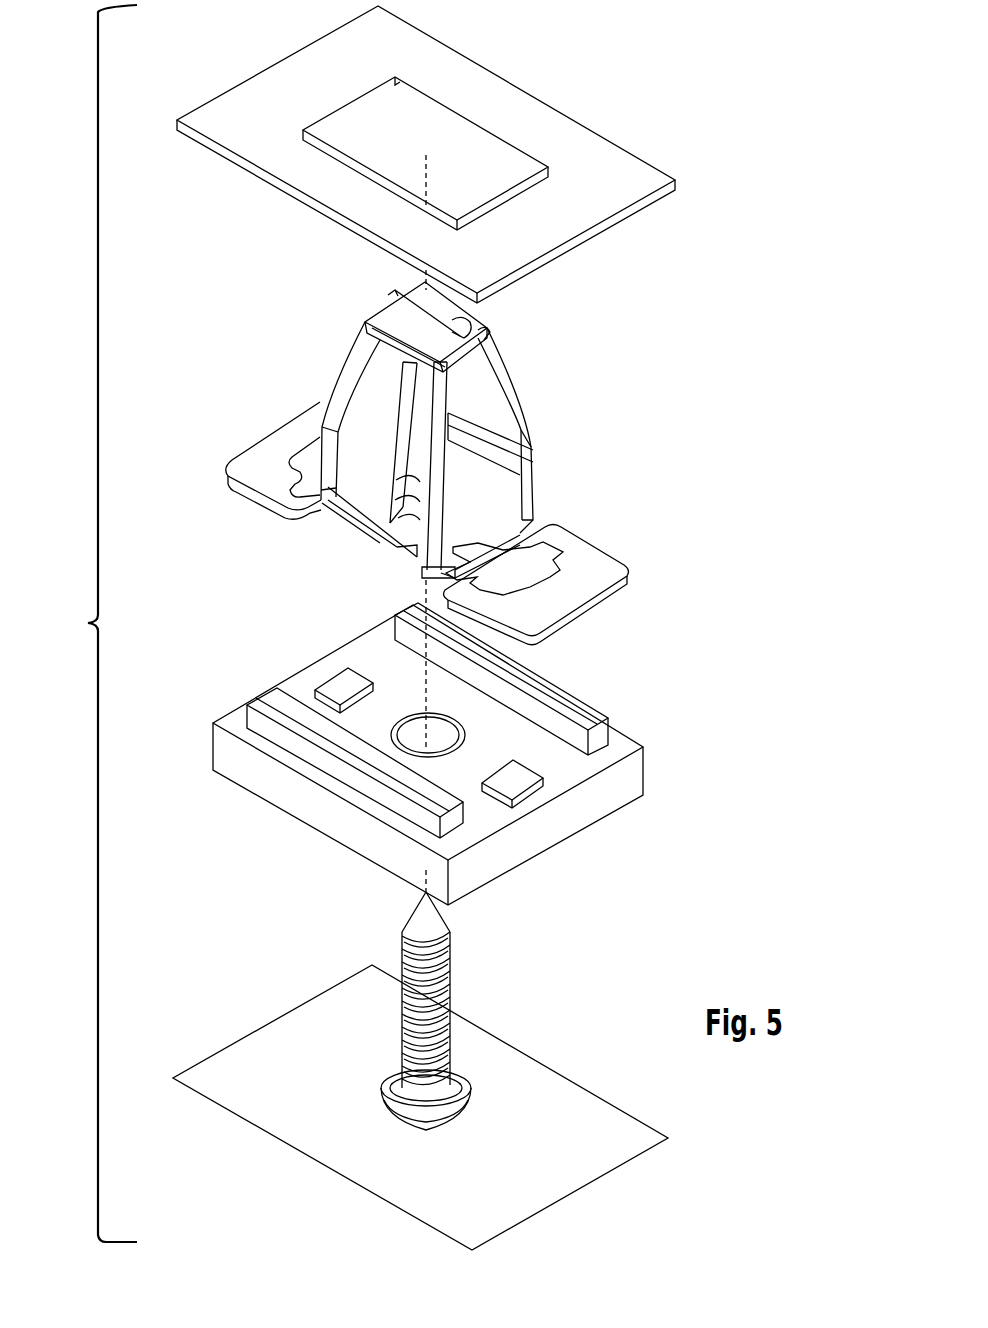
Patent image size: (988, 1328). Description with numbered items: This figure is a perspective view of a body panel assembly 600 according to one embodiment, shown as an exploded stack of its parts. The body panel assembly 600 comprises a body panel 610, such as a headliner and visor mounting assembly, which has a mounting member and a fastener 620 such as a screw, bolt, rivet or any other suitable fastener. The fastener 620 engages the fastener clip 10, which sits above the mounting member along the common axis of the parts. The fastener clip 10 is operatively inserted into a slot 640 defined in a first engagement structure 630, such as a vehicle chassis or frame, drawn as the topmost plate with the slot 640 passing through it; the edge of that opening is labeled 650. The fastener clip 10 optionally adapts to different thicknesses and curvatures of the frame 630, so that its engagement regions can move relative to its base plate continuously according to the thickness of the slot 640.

The fastener clip 10 is at (614, 390).
The body panel assembly 600 is at (98, 623).
The body panel 610 is at (515, 1107).
The fastener 620 is at (445, 1022).
The first engagement structure 630 is at (553, 132).
The slot 640 is at (420, 117).
The aperture edge 650 is at (367, 170).